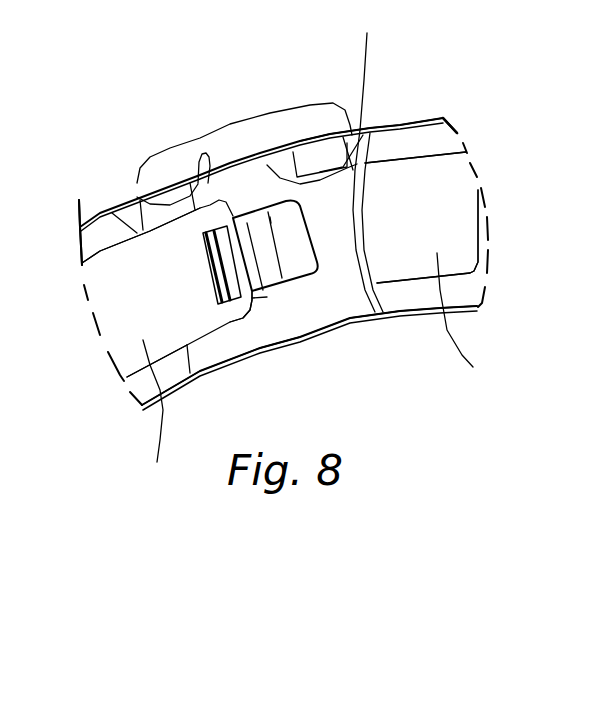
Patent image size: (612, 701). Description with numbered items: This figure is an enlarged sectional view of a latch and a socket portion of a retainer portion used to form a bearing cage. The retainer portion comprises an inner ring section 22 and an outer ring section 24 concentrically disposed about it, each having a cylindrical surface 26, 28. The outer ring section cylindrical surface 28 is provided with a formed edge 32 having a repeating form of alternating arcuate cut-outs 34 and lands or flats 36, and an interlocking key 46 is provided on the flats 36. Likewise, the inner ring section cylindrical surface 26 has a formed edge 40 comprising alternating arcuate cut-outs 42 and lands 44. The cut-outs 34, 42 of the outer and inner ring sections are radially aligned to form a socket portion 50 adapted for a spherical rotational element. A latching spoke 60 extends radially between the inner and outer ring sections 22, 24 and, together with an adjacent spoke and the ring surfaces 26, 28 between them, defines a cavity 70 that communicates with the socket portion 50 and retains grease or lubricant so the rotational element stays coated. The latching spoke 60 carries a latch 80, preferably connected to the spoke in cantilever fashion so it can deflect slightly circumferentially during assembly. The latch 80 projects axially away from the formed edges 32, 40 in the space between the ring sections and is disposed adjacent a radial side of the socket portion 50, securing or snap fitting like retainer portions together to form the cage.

The inner ring section 22 is at (414, 277).
The outer ring section 24 is at (455, 193).
The inner ring section cylindrical surface 26 is at (309, 356).
The outer ring section cylindrical surface 28 is at (283, 249).
The formed edge of outer ring section 32 is at (371, 89).
The arcuate cut-outs of outer ring section 34 is at (258, 157).
The lands or flats of outer ring section 36 is at (362, 158).
The formed edge of inner ring section 40 is at (251, 353).
The arcuate cut-outs of inner ring section 42 is at (319, 418).
The lands of inner ring section 44 is at (174, 400).
The interlocking key 46 is at (244, 110).
The socket portion 50 is at (258, 148).
The latching spoke 60 is at (275, 317).
The cavity 70 is at (324, 366).
The latch 80 is at (173, 265).